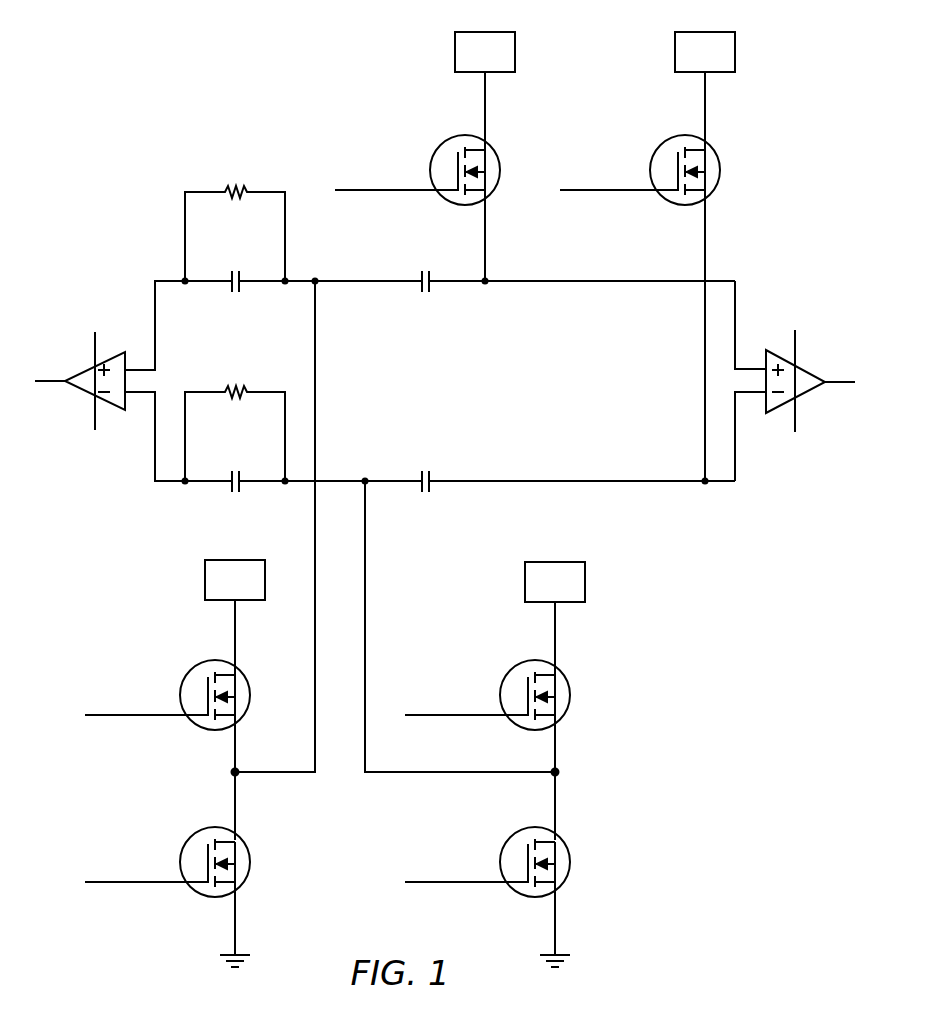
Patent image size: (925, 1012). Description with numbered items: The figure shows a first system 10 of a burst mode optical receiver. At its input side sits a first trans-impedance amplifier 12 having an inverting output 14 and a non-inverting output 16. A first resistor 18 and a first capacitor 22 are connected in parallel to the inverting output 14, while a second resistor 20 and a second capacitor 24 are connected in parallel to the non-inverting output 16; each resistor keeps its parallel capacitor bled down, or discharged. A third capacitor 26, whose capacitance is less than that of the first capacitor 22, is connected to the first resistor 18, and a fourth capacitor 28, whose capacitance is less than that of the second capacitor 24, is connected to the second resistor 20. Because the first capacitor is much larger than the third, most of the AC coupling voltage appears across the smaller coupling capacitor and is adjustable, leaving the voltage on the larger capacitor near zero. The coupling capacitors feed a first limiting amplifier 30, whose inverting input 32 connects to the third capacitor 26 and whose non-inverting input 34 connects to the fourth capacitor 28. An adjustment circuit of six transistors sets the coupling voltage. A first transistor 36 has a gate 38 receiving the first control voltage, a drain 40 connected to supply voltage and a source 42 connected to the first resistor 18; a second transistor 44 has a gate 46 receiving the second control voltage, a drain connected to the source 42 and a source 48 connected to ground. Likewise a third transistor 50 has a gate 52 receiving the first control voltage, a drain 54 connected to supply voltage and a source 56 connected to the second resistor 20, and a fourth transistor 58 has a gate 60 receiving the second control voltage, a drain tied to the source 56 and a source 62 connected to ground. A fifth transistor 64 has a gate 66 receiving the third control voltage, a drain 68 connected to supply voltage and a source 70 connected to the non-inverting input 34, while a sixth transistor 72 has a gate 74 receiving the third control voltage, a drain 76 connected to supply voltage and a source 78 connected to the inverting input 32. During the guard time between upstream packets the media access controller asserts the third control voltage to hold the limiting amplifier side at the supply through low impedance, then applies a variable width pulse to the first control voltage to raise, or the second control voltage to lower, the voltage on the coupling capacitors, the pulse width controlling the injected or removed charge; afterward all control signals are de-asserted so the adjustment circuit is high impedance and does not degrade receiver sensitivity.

The first system 10 is at (212, 58).
The first trans-impedance amplifier 12 is at (84, 366).
The inverting output 14 is at (155, 452).
The non-inverting output 16 is at (155, 312).
The first resistor 18 is at (235, 400).
The second resistor 20 is at (235, 200).
The first capacitor 22 is at (238, 498).
The second capacitor 24 is at (236, 300).
The third capacitor 26 is at (426, 498).
The fourth capacitor 28 is at (426, 298).
The first limiting amplifier 30 is at (804, 369).
The inverting input 32 is at (735, 458).
The non-inverting input 34 is at (735, 312).
The first transistor 36 is at (200, 671).
The gate 38 is at (126, 720).
The drain 40 is at (236, 633).
The source 42 is at (238, 781).
The second transistor 44 is at (200, 838).
The gate 46 is at (126, 887).
The source 48 is at (236, 926).
The third transistor 50 is at (520, 671).
The gate 52 is at (446, 720).
The drain 54 is at (556, 633).
The source 56 is at (558, 781).
The fourth transistor 58 is at (520, 838).
The gate 60 is at (446, 887).
The source 62 is at (556, 926).
The fifth transistor 64 is at (450, 146).
The gate 66 is at (378, 195).
The drain 68 is at (486, 108).
The source 70 is at (486, 240).
The sixth transistor 72 is at (670, 146).
The gate 74 is at (598, 195).
The drain 76 is at (706, 108).
The source 78 is at (706, 240).